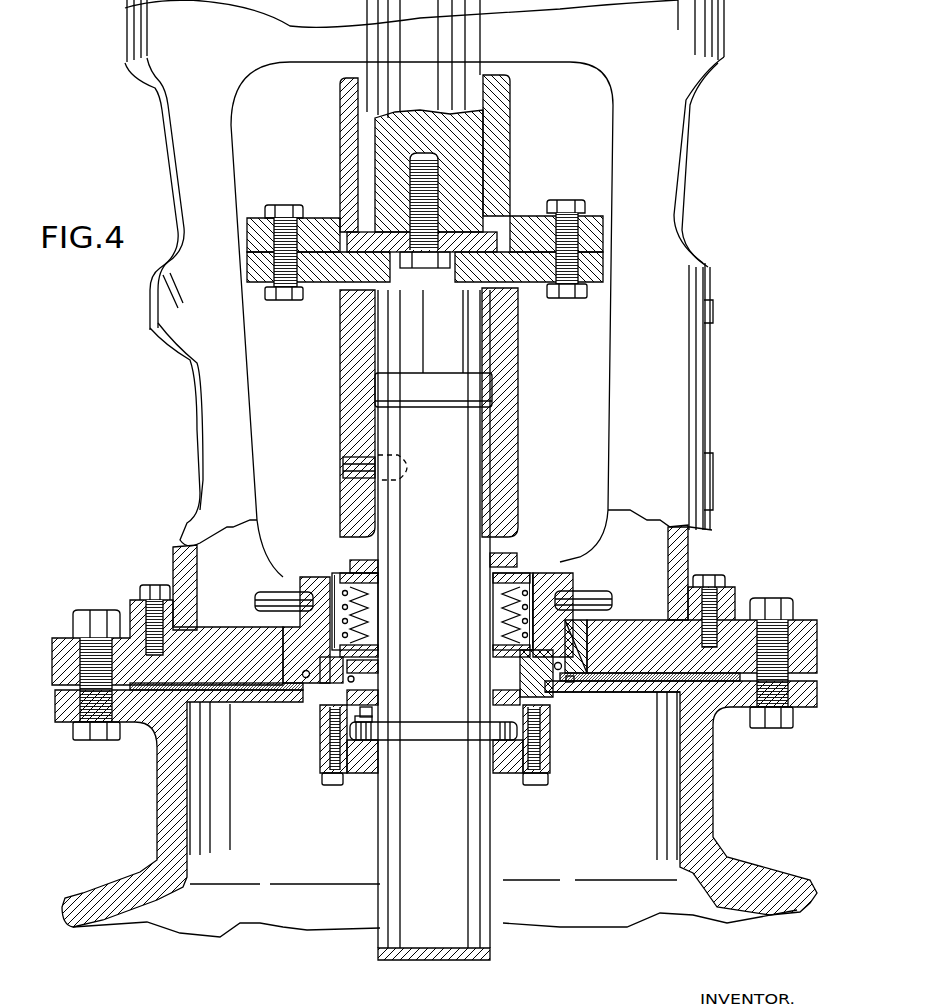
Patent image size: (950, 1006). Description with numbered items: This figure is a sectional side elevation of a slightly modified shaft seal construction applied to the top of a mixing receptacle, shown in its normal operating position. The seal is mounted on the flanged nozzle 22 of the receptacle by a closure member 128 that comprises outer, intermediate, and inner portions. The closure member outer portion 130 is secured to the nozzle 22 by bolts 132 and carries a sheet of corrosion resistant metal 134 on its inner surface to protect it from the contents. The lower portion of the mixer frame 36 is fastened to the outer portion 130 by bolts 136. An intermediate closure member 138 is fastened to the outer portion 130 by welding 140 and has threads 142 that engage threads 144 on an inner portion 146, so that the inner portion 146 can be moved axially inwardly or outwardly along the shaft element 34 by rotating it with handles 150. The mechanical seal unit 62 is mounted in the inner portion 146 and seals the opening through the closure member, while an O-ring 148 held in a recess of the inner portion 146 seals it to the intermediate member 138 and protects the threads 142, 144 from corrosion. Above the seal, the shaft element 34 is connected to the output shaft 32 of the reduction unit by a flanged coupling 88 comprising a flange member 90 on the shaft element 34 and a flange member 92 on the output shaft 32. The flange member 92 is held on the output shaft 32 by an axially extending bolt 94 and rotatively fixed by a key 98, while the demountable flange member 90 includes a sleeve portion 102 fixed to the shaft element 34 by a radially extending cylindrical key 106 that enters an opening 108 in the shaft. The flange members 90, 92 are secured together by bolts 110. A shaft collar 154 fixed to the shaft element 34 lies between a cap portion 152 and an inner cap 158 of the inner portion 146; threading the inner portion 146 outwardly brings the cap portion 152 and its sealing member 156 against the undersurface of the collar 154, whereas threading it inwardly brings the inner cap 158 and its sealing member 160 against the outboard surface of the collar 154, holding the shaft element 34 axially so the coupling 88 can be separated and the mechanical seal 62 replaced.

The flanged nozzle 22 is at (713, 812).
The output shaft 32 is at (418, 72).
The shaft element 34 is at (490, 860).
The frame member 36 is at (697, 436).
The mechanical seal unit 62 is at (520, 545).
The flanged coupling 88 is at (452, 246).
The flange member 90 is at (603, 268).
The flange member 92 is at (603, 217).
The bolt 94 is at (447, 269).
The key 98 is at (363, 132).
The sleeve portion 102 is at (347, 362).
The cylindrical key 106 is at (350, 469).
The opening 108 is at (408, 458).
The bolts 110 is at (277, 204).
The closure member 128 is at (805, 608).
The closure member outer portion 130 is at (58, 637).
The bolts 132 is at (93, 611).
The sheet of corrosion resistant metal 134 is at (260, 691).
The bolts 136 is at (153, 585).
The intermediate closure member 138 is at (589, 682).
The welding 140 is at (608, 685).
The threads 142 is at (572, 632).
The threads 144 is at (570, 645).
The inner portion 146 is at (546, 572).
The O-ring 148 is at (587, 675).
The handles 150 is at (279, 592).
The cap portion 152 is at (362, 785).
The shaft collar 154 is at (438, 731).
The sealing member 156 is at (500, 752).
The inner cap 158 is at (377, 703).
The sealing member 160 is at (373, 716).